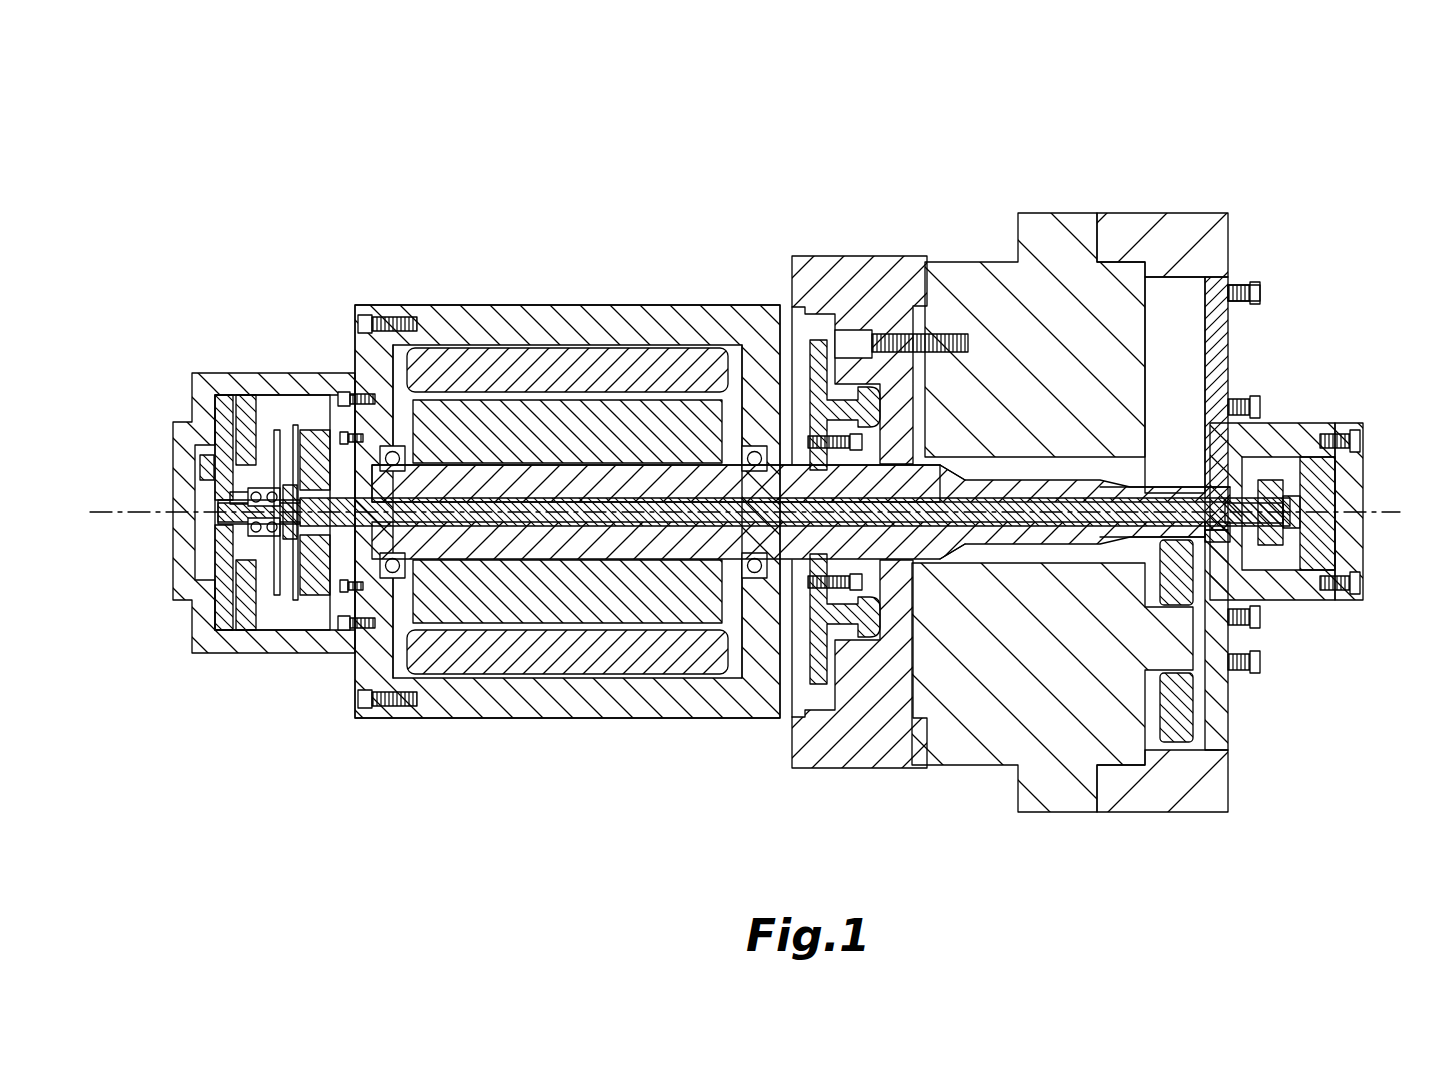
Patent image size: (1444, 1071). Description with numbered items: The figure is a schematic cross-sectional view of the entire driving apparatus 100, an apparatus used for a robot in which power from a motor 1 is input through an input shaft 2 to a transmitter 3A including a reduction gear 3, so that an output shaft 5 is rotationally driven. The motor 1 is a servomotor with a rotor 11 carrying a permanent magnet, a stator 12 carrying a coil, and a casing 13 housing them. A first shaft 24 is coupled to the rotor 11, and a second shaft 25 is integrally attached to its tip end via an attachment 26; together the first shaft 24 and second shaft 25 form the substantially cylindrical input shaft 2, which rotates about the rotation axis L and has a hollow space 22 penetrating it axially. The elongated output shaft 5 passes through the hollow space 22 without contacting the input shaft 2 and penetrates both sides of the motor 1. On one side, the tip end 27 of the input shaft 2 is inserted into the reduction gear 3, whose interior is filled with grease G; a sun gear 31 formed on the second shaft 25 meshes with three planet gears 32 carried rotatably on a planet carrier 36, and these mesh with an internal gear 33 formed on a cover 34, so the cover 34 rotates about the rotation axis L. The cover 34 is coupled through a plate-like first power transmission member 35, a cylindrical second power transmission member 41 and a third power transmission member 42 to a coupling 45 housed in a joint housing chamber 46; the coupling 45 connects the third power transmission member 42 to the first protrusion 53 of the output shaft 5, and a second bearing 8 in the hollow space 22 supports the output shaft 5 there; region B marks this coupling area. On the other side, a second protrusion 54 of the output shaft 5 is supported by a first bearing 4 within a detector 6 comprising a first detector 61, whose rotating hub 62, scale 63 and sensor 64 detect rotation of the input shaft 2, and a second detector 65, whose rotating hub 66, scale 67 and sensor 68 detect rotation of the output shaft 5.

The driving apparatus 100 is at (334, 126).
The motor 1 is at (470, 287).
The input shaft 2 is at (965, 819).
The reduction gear 3 is at (1122, 500).
The transmitter 3A is at (1368, 165).
The first supporting member (first bearing) 4 is at (260, 520).
The output shaft 5 is at (1045, 520).
The detector 6 is at (188, 352).
The second supporting member (second bearing) 8 is at (1268, 520).
The rotor 11 is at (660, 430).
The stator 12 is at (530, 372).
The casing 13 is at (620, 700).
The hollow space 22 is at (500, 530).
The first shaft 24 is at (690, 540).
The second shaft 25 is at (965, 545).
The attachment 26 is at (820, 355).
The tip end 27 is at (1215, 542).
The sun gear 31 is at (1180, 485).
The planet gears 32 is at (1185, 745).
The internal gear 33 is at (1200, 275).
The cover 34 is at (1205, 245).
The first power transmission member 35 is at (1255, 302).
The planet carrier 36 is at (1045, 795).
The second power transmission member 41 is at (1280, 440).
The third power transmission member 42 is at (1350, 558).
The coupling 45 is at (1322, 490).
The joint housing chamber 46 is at (1315, 470).
The first protrusion 53 is at (1225, 530).
The second protrusion 54 is at (290, 495).
The first detector 61 is at (215, 738).
The rotating hub 62 is at (300, 580).
The scale 63 is at (278, 560).
The sensor (rotation detector) 64 is at (243, 640).
The second detector 65 is at (325, 300).
The rotating hub 66 is at (265, 490).
The scale 67 is at (240, 500).
The sensor (rotation detector) 68 is at (215, 470).
The grease G is at (1170, 300).
The region B is at (1180, 475).
The rotation axis L is at (756, 512).